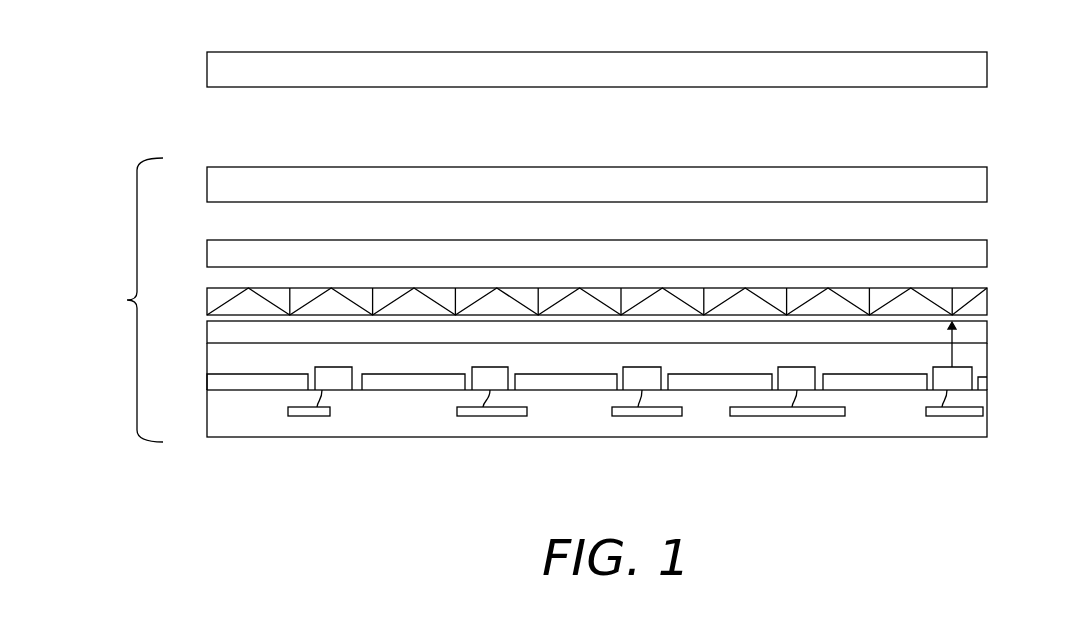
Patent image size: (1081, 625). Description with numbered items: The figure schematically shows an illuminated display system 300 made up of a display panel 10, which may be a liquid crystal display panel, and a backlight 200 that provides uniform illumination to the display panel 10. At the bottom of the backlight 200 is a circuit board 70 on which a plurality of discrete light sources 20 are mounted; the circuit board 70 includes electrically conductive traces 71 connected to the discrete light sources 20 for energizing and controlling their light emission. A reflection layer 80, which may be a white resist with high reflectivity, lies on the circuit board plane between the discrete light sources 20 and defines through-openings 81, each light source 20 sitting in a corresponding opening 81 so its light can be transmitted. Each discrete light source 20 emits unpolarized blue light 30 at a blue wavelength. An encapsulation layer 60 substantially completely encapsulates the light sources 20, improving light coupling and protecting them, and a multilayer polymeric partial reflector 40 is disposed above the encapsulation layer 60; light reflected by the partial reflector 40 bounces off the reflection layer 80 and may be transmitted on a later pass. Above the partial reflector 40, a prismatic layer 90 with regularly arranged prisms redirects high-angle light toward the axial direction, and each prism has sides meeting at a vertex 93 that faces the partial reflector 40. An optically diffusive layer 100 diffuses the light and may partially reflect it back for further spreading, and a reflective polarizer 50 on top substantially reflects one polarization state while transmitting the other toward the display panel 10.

The illuminated display system 300 is at (183, 30).
The display panel 10 is at (980, 70).
The backlight 200 is at (127, 300).
The reflective polarizer 50 is at (980, 185).
The optically diffusive layer 100 is at (980, 255).
The prismatic layer 90 is at (980, 304).
The vertex 93 is at (538, 315).
The multilayer polymeric partial reflector 40 is at (980, 331).
The unpolarized blue light 30 is at (953, 350).
The encapsulation layer 60 is at (217, 360).
The reflection layer 80 is at (883, 382).
The discrete light source 20 is at (342, 380).
The through-opening 81 is at (357, 397).
The circuit board 70 is at (973, 425).
The electrically conductive trace 71 is at (828, 416).